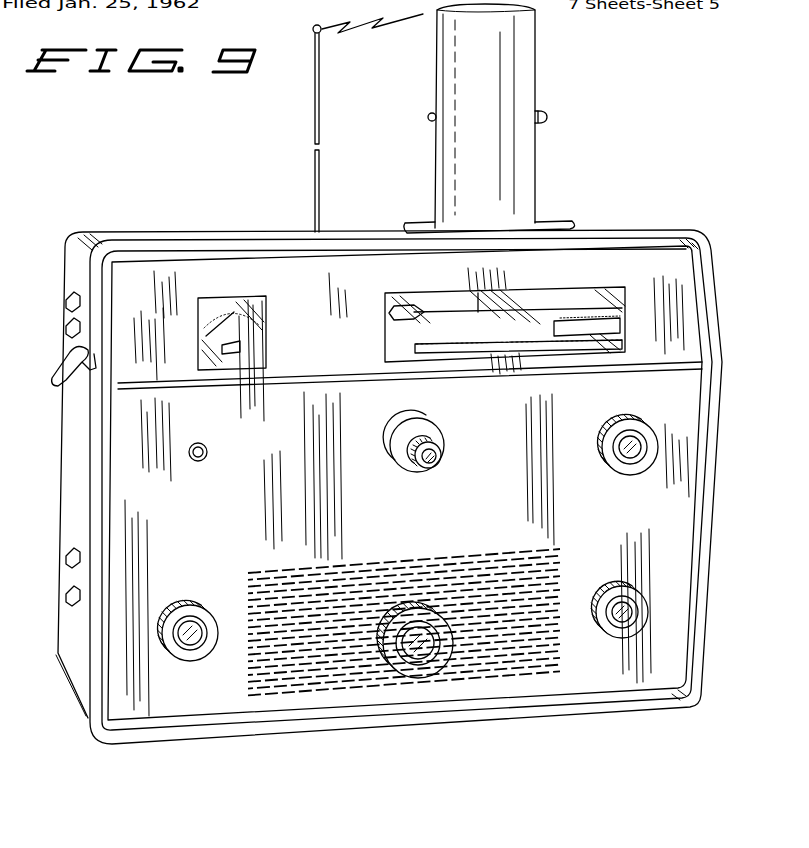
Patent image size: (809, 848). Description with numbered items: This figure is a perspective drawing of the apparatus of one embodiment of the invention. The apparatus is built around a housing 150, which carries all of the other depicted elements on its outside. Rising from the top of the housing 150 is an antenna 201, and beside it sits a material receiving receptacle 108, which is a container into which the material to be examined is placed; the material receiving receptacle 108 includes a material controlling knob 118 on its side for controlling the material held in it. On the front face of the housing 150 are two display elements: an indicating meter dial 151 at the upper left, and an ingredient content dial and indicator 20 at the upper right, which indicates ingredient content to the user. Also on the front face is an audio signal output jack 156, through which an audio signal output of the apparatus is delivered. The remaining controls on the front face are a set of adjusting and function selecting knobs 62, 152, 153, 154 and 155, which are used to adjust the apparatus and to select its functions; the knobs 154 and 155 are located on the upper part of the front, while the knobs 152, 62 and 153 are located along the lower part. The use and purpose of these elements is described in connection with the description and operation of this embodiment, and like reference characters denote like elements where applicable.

The housing 150 is at (180, 183).
The indicating meter dial 151 is at (252, 298).
The audio signal output jack 156 is at (210, 452).
The ingredient content dial and indicator 20 is at (554, 291).
The adjusting and function selecting knob 155 is at (436, 456).
The adjusting and function selecting knob 154 is at (657, 466).
The adjusting and function selecting knob 152 is at (188, 661).
The adjusting and function selecting knob 62 is at (405, 678).
The adjusting and function selecting knob 153 is at (616, 638).
The antenna 201 is at (321, 110).
The material receiving receptacle 108 is at (564, 53).
The material controlling knob 118 is at (548, 116).